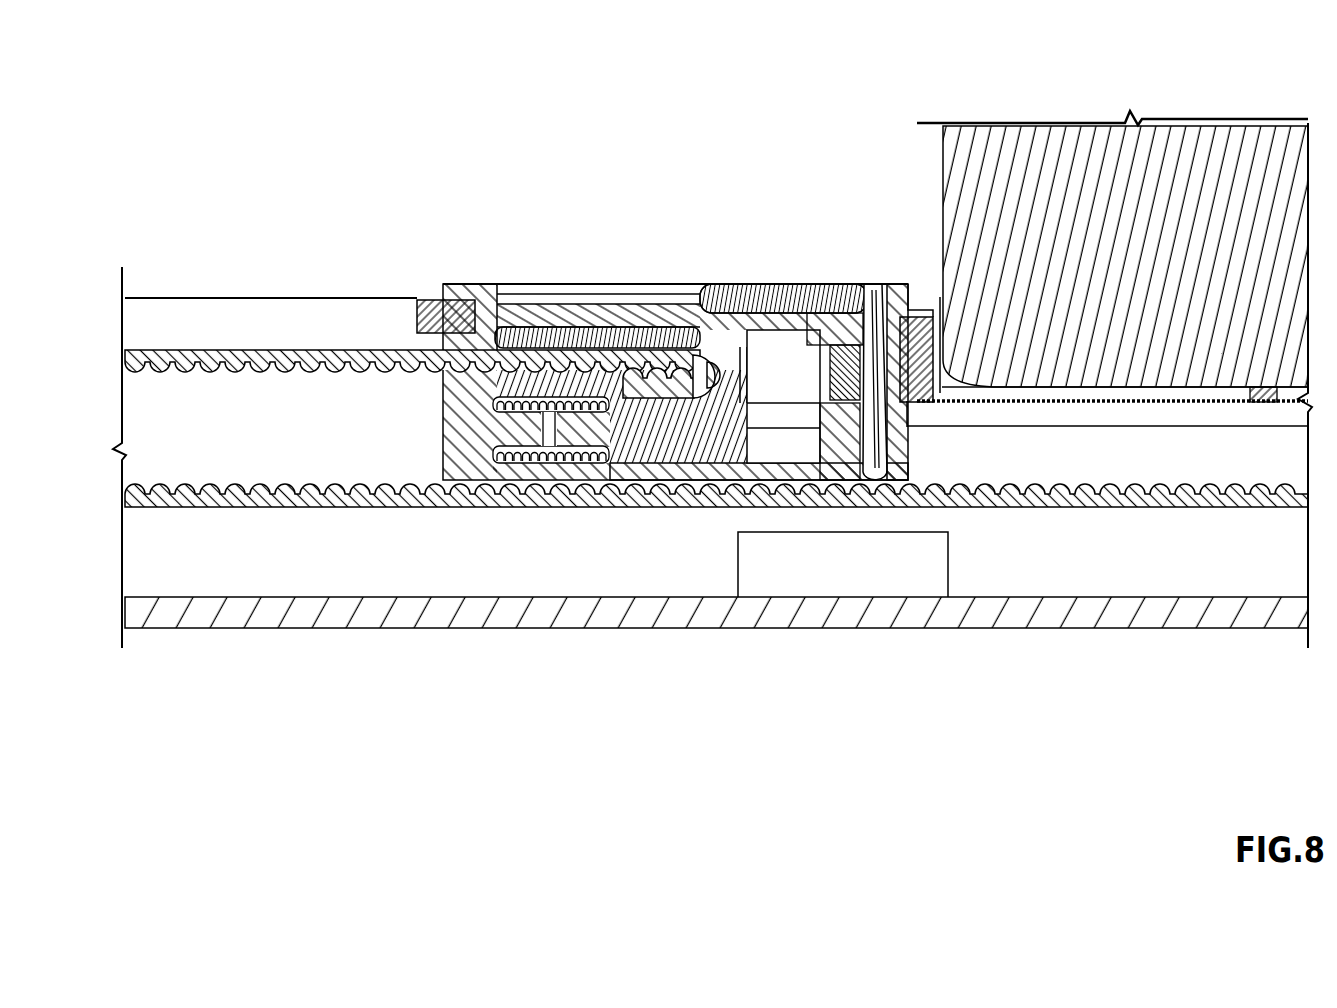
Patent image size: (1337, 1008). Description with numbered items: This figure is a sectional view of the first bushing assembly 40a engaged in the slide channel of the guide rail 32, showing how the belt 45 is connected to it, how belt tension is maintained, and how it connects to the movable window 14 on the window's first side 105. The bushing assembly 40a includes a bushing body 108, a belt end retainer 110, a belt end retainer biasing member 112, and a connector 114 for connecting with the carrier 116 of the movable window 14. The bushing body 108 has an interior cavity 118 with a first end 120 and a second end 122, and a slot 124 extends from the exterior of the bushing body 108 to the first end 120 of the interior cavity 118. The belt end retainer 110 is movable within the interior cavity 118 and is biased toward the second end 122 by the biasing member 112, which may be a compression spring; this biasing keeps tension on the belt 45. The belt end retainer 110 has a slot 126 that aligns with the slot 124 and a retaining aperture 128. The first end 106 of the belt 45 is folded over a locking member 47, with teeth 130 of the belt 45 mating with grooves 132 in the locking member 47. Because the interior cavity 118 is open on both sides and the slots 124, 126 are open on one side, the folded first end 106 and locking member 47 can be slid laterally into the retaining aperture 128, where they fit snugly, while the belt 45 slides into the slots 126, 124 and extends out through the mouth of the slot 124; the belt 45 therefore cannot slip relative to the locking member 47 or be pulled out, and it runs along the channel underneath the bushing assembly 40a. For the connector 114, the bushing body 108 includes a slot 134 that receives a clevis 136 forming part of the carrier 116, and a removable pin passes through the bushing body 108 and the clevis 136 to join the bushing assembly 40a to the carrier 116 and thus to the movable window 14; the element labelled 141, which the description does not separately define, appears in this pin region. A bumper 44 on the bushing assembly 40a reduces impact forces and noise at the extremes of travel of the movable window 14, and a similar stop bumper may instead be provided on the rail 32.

The movable window 14 is at (1210, 178).
The guide rail 32 is at (206, 628).
The first bushing assembly 40a is at (414, 238).
The bumper 44 is at (417, 313).
The belt 45 is at (268, 505).
The locking member 47 is at (655, 377).
The first side 105 is at (943, 142).
The first end 106 is at (663, 360).
The bushing body 108 is at (520, 322).
The belt end retainer 110 is at (590, 330).
The belt end retainer biasing member 112 is at (517, 452).
The connector 114 is at (845, 160).
The carrier 116 is at (907, 313).
The interior cavity 118 is at (762, 352).
The first end 120 is at (497, 388).
The second end 122 is at (805, 350).
The slot 124 is at (443, 383).
The slot 126 is at (578, 360).
The retaining aperture 128 is at (827, 383).
The teeth 130 is at (738, 397).
The grooves 132 is at (688, 367).
The slot 134 is at (837, 453).
The clevis 136 is at (933, 358).
The pin 141 is at (873, 425).